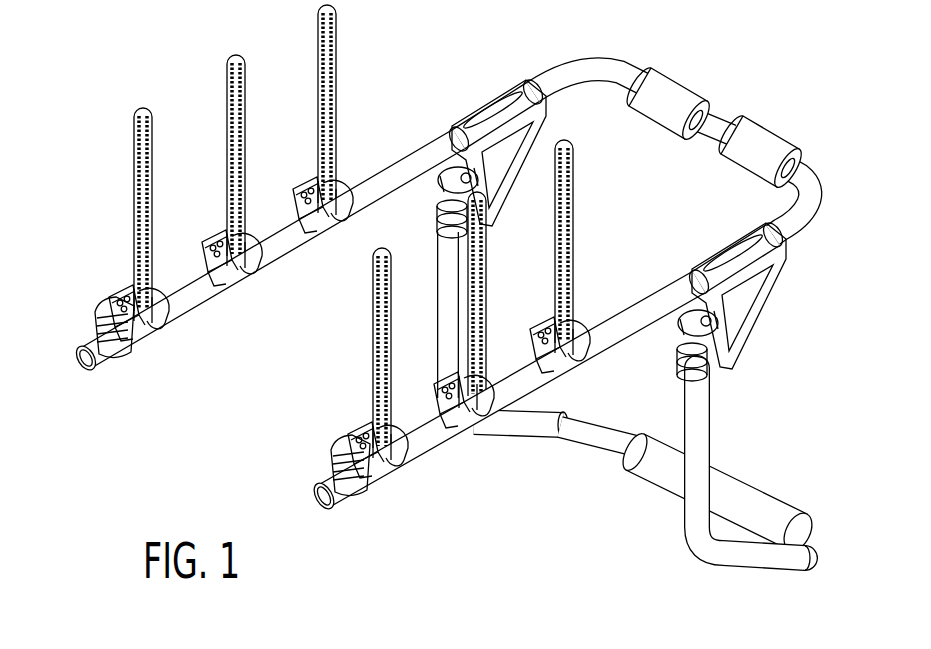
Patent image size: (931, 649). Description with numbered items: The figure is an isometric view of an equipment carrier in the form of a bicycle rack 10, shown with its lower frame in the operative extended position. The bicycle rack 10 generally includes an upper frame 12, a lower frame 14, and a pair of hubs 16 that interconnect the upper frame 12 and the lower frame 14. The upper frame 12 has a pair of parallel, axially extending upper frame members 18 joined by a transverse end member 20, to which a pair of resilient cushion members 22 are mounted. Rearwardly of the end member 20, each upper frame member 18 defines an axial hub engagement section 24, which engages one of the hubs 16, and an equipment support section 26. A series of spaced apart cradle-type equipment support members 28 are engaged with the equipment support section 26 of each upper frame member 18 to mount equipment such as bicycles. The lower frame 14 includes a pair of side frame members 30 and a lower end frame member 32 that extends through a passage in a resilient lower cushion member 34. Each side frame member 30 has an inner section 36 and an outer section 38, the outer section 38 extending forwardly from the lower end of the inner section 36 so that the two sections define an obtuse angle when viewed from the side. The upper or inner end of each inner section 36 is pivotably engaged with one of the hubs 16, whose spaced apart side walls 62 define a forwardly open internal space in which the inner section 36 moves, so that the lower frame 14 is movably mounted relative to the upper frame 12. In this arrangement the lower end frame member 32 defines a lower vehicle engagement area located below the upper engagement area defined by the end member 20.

The bicycle rack 10 is at (112, 212).
The upper frame 12 is at (623, 45).
The lower frame 14 is at (658, 532).
The hubs 16 is at (497, 98).
The upper frame members 18 is at (398, 161).
The transverse end member 20 is at (732, 118).
The resilient cushion members 22 is at (688, 80).
The hub engagement section 24 is at (428, 192).
The equipment support section 26 is at (180, 322).
The cradle-type equipment support members 28 is at (241, 301).
The side frame members 30 is at (520, 441).
The lower end frame member 32 is at (442, 283).
The resilient lower cushion member 34 is at (744, 480).
The inner section 36 is at (708, 410).
The outer section 38 is at (548, 432).
The side walls 62 is at (762, 303).